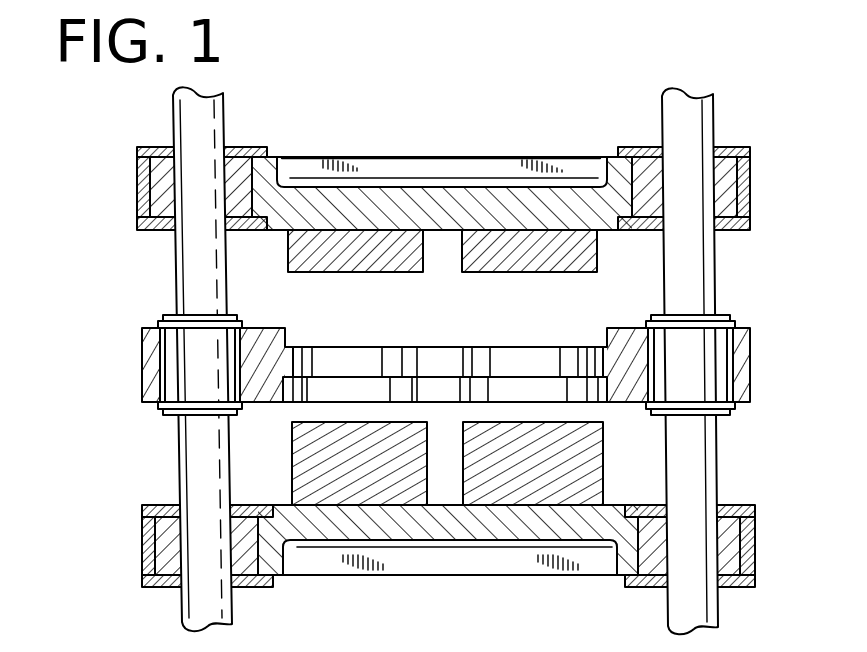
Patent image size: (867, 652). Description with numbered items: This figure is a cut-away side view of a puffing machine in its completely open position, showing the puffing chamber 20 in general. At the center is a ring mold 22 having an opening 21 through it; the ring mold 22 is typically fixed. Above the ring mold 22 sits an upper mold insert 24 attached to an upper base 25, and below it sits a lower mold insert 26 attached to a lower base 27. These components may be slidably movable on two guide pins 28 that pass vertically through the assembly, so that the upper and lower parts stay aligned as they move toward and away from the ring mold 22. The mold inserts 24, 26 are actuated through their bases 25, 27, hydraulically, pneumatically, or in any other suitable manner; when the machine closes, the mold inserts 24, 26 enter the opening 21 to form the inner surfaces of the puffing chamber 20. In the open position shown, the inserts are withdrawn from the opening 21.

The puffing chamber 20 is at (83, 197).
The opening 21 is at (350, 360).
The ring mold 22 is at (622, 395).
The upper mold insert 24 is at (598, 249).
The upper base 25 is at (455, 196).
The lower mold insert 26 is at (603, 477).
The lower base 27 is at (502, 530).
The guide pins 28 is at (187, 139).